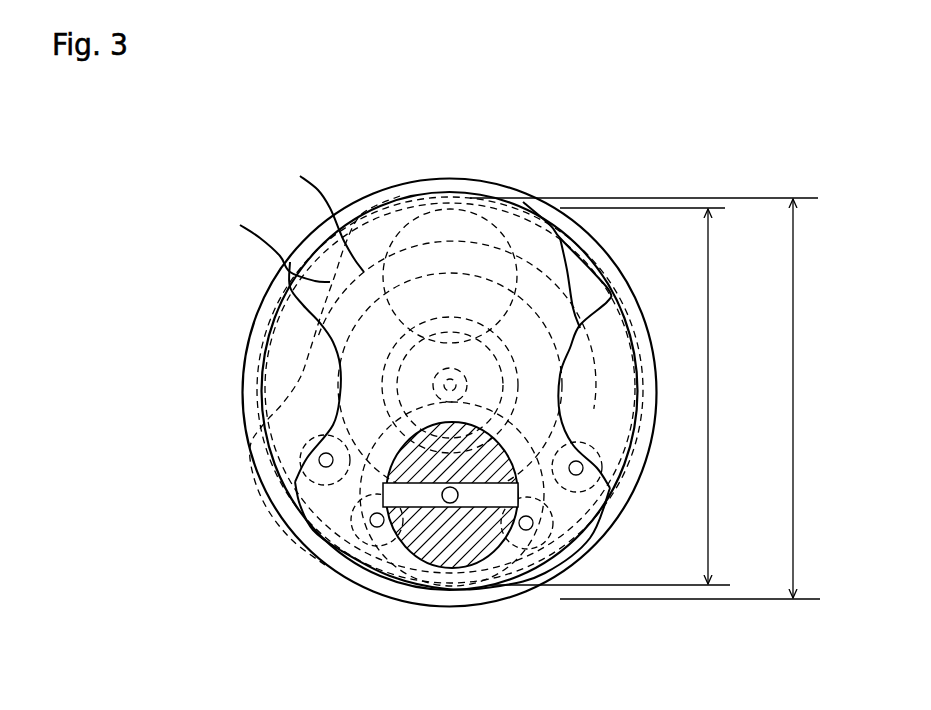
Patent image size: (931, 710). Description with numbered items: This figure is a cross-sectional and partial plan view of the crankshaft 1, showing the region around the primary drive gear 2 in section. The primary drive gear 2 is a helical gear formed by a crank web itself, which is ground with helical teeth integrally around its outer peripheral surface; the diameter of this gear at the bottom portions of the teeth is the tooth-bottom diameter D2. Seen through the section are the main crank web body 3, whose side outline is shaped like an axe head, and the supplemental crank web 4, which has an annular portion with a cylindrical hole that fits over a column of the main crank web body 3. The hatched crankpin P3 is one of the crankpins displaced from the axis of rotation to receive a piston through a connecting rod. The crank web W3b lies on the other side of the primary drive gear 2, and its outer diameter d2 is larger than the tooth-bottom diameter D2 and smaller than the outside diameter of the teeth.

The crankshaft 1 is at (465, 160).
The primary drive gear 2 is at (254, 312).
The main crank web body 3 is at (240, 225).
The supplemental crank web 4 is at (300, 176).
The crank web W3b is at (320, 542).
The crankpin P3 is at (414, 530).
The tooth-bottom diameter of the primary drive gear D2 is at (610, 396).
The outer diameter of the crank web W3b d2 is at (645, 398).